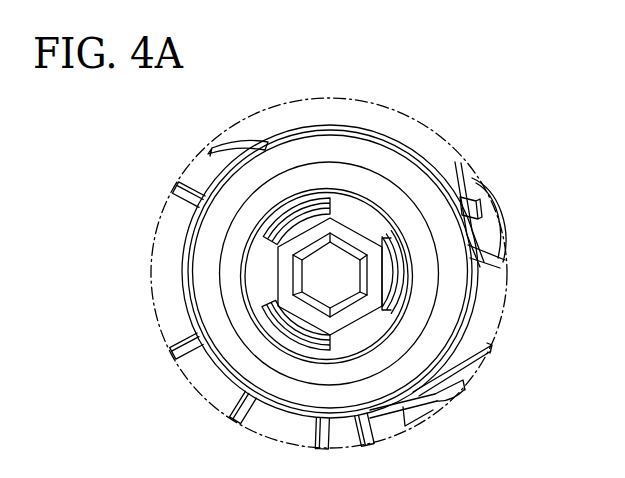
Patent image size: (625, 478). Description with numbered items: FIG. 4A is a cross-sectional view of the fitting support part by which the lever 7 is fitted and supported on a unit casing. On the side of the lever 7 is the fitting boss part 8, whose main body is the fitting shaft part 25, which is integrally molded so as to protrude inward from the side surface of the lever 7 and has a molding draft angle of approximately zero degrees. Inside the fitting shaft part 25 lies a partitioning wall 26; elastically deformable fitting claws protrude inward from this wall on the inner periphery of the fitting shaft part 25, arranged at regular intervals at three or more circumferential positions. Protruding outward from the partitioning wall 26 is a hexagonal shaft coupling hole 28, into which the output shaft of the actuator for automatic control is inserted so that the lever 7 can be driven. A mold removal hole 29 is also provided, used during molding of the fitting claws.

The lever 7 is at (440, 153).
The fitting boss part 8 is at (470, 319).
The fitting shaft part 25 is at (232, 293).
The partitioning wall 26 is at (372, 213).
The hexagonal shaft coupling hole 28 is at (300, 312).
The mold removal hole 29 is at (405, 277).